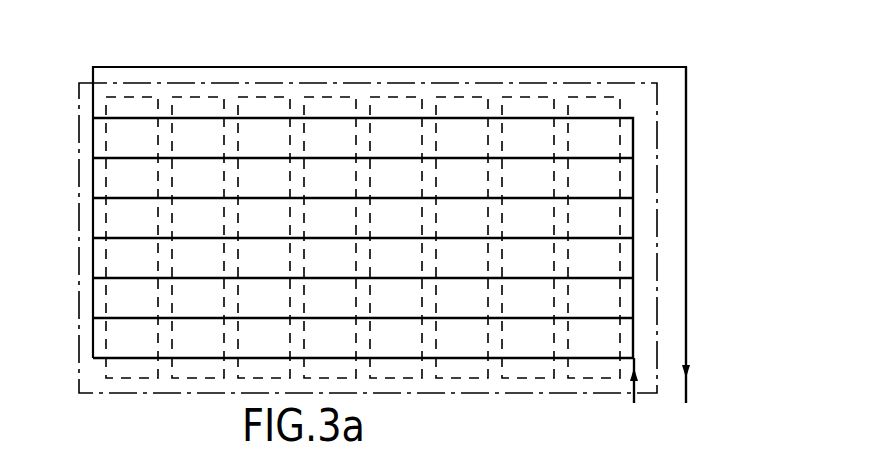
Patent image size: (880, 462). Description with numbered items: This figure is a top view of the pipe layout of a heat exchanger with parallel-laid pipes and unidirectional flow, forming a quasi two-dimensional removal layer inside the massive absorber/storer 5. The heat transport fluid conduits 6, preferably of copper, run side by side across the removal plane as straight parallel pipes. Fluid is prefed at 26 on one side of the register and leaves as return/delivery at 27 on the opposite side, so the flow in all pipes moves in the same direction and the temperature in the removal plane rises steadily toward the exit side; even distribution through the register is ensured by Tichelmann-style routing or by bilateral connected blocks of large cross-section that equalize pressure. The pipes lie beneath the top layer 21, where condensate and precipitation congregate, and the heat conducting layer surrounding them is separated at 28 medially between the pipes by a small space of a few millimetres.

The massive absorber/storer 5 is at (77, 260).
The heat transport fluid conduits 6 is at (540, 118).
The top layer 21 is at (448, 102).
The separation in heat conducting layer 28 is at (362, 102).
The prefeed 26 is at (634, 398).
The return/delivery 27 is at (686, 392).